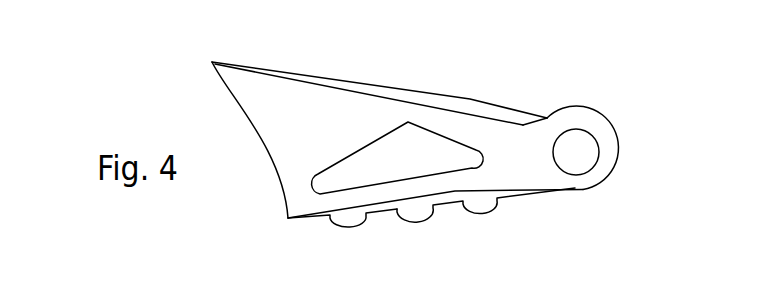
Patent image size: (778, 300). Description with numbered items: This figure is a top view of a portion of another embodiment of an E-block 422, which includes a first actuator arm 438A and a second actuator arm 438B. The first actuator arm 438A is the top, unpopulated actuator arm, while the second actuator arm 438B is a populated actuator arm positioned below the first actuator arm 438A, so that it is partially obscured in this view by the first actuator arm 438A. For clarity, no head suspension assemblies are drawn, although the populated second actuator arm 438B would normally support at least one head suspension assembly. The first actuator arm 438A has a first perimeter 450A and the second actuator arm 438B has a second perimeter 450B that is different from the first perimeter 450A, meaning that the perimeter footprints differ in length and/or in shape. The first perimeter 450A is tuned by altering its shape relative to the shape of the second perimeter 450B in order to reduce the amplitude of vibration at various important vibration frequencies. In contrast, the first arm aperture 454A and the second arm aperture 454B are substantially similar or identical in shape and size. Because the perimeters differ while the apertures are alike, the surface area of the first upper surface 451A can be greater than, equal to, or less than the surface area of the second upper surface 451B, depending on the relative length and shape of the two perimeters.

The E-block 422 is at (457, 63).
The first upper surface 451A is at (278, 102).
The second upper surface 451B is at (510, 117).
The first perimeter 450A is at (463, 112).
The second perimeter 450B is at (422, 90).
The first actuator arm 438A is at (520, 138).
The second actuator arm 438B is at (572, 107).
The first arm aperture 454A is at (358, 170).
The second arm aperture 454B is at (440, 162).